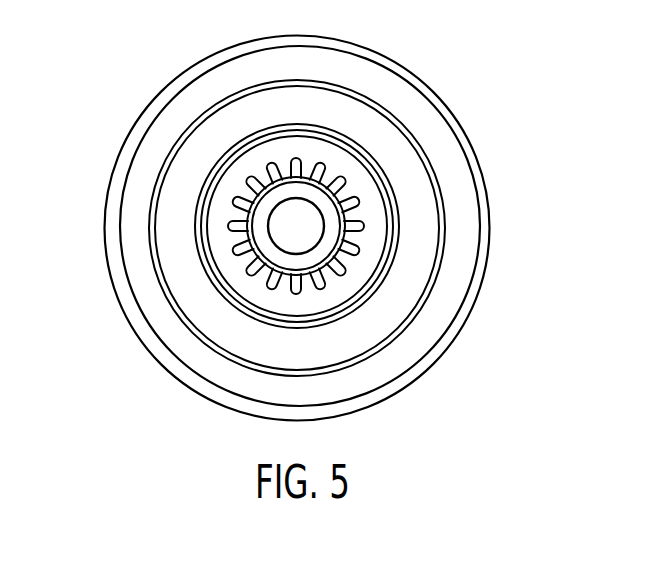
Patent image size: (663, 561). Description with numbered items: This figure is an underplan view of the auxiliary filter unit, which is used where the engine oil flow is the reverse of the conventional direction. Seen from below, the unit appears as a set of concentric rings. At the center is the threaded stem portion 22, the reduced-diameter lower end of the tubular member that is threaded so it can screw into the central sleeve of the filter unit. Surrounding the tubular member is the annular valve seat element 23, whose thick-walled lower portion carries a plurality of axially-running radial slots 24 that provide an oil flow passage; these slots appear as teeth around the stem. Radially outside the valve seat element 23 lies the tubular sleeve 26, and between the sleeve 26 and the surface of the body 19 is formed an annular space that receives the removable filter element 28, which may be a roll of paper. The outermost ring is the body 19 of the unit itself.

The body 19 is at (405, 343).
The removable filter element 28 is at (352, 335).
The annular valve seat element 23 is at (360, 267).
The tubular sleeve 26 is at (193, 225).
The threaded stem portion 22 is at (266, 277).
The radial slots 24 is at (358, 222).